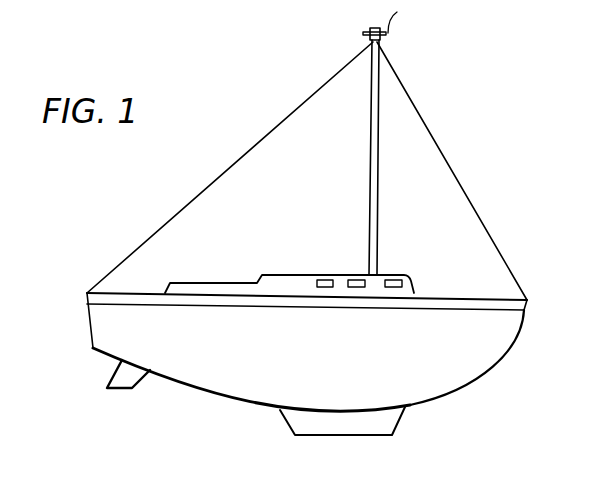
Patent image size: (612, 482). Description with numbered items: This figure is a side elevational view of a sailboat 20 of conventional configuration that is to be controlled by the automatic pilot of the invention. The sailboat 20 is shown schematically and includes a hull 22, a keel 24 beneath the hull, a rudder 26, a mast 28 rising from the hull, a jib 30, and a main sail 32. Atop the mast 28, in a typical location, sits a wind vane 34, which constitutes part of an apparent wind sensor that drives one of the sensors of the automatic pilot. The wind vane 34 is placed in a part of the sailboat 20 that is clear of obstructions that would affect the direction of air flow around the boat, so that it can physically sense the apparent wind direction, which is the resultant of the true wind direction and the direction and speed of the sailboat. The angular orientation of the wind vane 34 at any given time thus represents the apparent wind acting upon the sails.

The sailboat 20 is at (148, 228).
The hull 22 is at (227, 383).
The keel 24 is at (355, 430).
The rudder 26 is at (118, 372).
The mast 28 is at (370, 210).
The jib 30 is at (445, 187).
The main sail 32 is at (233, 178).
The wind vane 34 is at (367, 32).